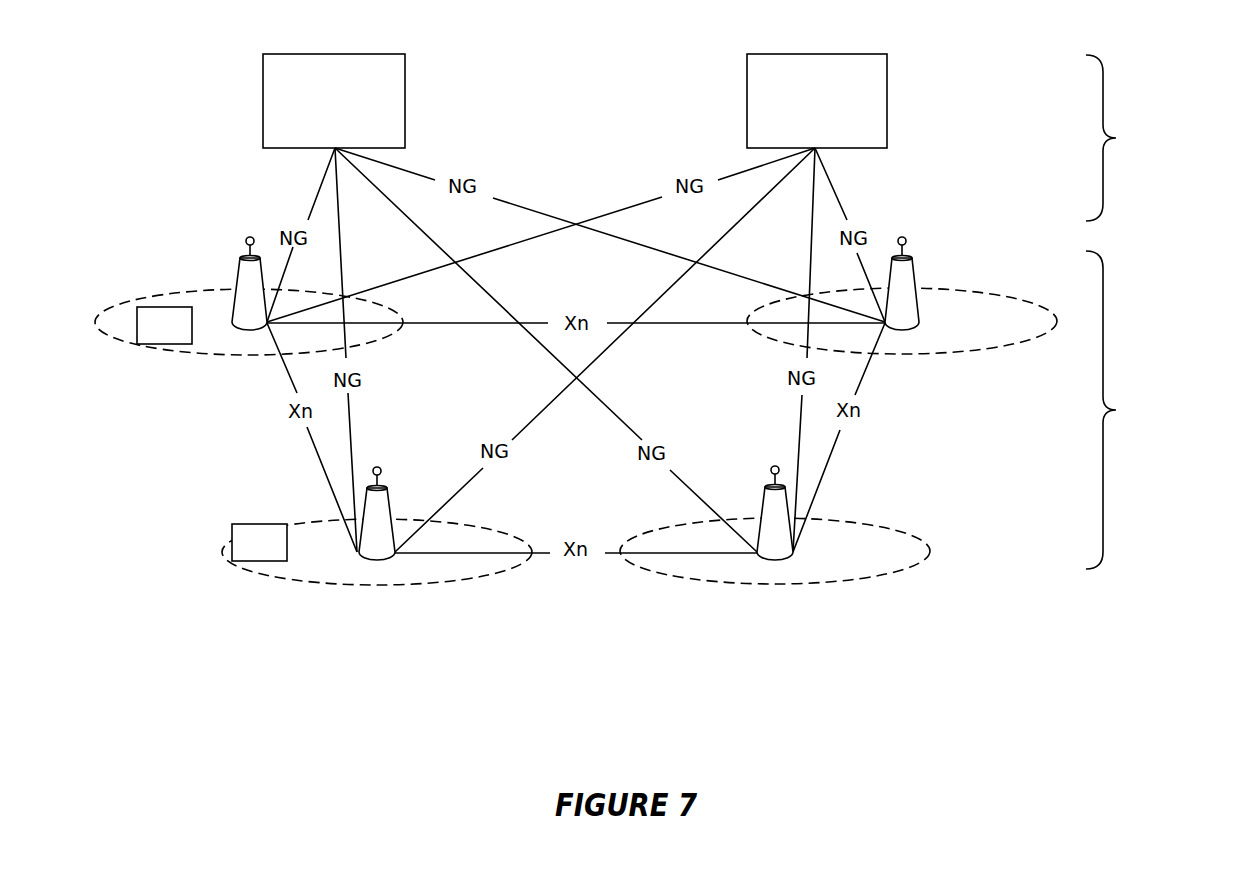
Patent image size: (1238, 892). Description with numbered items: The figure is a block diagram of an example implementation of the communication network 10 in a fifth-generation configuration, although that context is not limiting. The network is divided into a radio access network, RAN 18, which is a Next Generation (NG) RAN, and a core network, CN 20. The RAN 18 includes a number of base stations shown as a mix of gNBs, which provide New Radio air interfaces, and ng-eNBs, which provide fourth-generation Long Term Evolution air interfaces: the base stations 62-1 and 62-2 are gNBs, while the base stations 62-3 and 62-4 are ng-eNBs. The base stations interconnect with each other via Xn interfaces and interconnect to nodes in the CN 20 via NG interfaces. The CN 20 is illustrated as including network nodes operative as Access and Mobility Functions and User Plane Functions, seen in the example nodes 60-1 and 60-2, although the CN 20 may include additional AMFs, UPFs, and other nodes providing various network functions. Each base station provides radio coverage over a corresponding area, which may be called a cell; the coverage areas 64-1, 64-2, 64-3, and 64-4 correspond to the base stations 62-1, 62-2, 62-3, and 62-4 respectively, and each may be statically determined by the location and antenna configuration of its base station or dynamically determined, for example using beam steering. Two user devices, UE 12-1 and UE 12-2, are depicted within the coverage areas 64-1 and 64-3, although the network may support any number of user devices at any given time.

The communication network 10 is at (135, 140).
The user device 12-1 is at (165, 344).
The user device 12-2 is at (260, 561).
The RAN 18 is at (1153, 410).
The CN 20 is at (1132, 138).
The node 60-1 is at (334, 101).
The node 60-2 is at (817, 101).
The base station 62-1 is at (233, 313).
The base station 62-2 is at (900, 332).
The base station 62-3 is at (377, 560).
The base station 62-4 is at (780, 560).
The area 64-1 is at (98, 328).
The area 64-2 is at (942, 288).
The area 64-3 is at (313, 518).
The area 64-4 is at (820, 518).